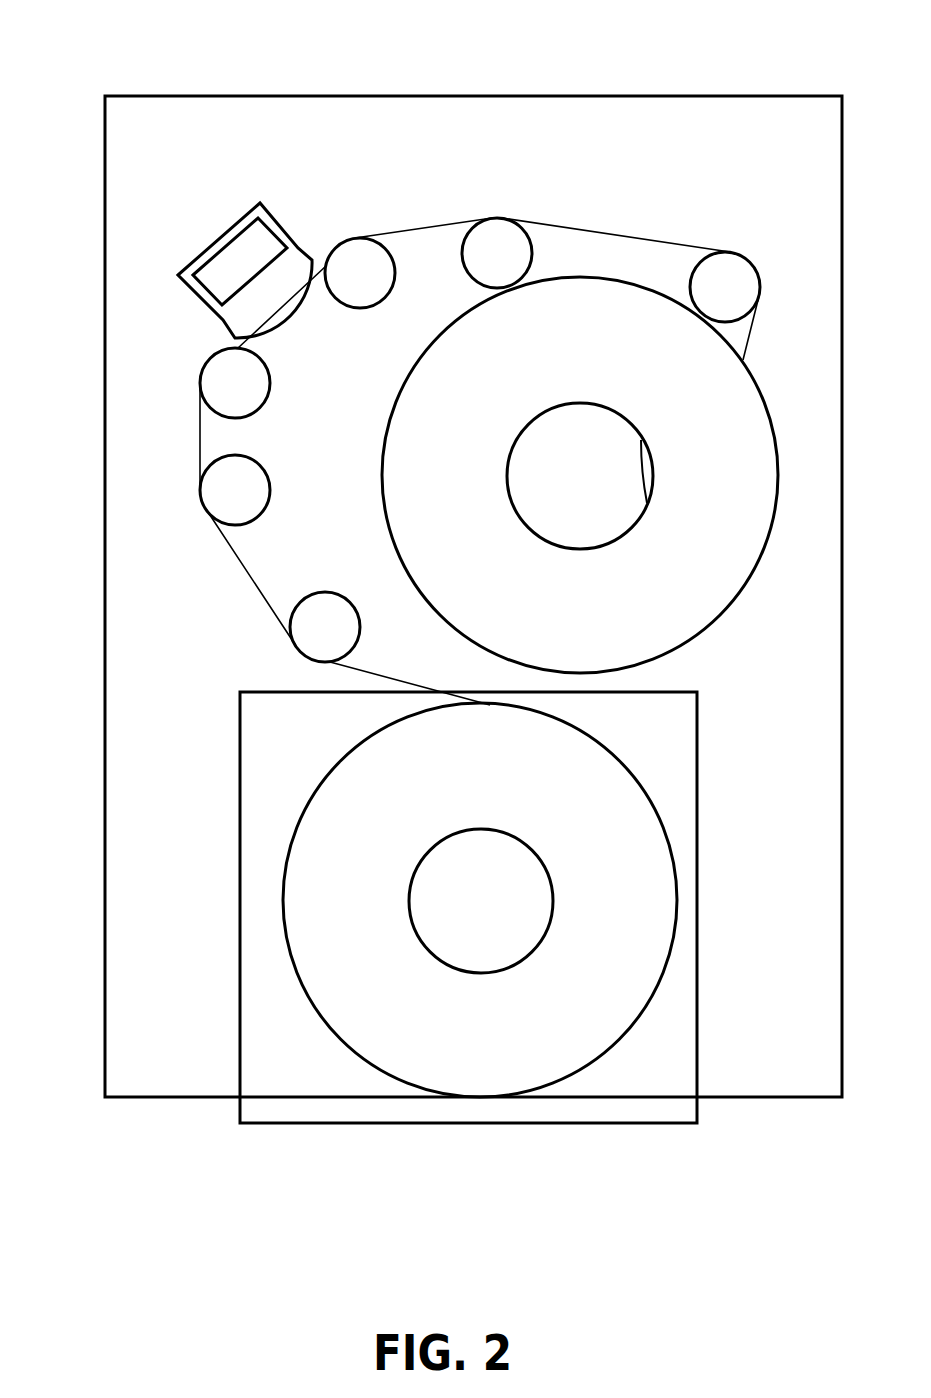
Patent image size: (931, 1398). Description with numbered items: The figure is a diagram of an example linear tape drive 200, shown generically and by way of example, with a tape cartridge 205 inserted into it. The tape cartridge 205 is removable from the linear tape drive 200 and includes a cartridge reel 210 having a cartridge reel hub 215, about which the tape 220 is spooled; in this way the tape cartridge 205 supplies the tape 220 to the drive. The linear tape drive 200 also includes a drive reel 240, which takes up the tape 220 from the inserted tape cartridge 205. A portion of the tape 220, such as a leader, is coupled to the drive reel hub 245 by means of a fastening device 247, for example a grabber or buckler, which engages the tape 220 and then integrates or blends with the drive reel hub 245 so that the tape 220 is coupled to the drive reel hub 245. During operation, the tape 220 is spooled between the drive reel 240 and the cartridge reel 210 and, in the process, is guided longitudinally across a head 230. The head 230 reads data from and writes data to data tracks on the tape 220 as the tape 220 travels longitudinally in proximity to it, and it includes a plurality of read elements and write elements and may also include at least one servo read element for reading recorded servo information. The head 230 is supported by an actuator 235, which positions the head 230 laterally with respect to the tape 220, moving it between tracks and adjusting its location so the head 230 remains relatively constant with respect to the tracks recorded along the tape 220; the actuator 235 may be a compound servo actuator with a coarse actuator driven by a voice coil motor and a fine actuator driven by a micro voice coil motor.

The linear tape drive 200 is at (108, 63).
The tape cartridge 205 is at (239, 698).
The cartridge reel 210 is at (332, 770).
The cartridge reel hub 215 is at (411, 882).
The tape 220 is at (620, 236).
The head 230 is at (309, 258).
The actuator 235 is at (220, 238).
The drive reel 240 is at (382, 485).
The drive reel hub 245 is at (516, 440).
The fastening device 247 is at (645, 440).